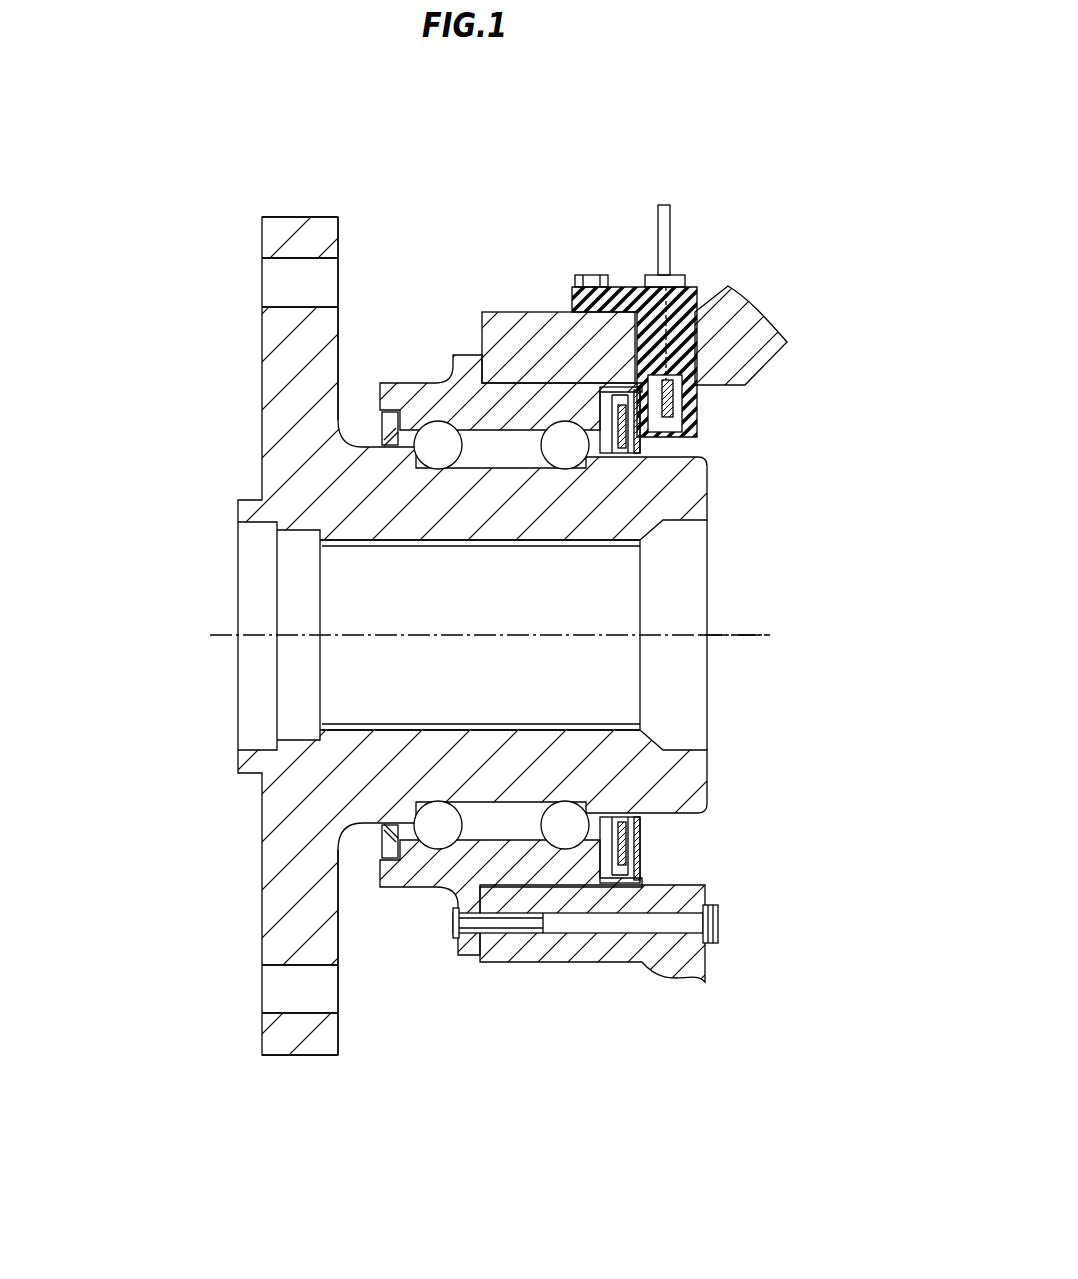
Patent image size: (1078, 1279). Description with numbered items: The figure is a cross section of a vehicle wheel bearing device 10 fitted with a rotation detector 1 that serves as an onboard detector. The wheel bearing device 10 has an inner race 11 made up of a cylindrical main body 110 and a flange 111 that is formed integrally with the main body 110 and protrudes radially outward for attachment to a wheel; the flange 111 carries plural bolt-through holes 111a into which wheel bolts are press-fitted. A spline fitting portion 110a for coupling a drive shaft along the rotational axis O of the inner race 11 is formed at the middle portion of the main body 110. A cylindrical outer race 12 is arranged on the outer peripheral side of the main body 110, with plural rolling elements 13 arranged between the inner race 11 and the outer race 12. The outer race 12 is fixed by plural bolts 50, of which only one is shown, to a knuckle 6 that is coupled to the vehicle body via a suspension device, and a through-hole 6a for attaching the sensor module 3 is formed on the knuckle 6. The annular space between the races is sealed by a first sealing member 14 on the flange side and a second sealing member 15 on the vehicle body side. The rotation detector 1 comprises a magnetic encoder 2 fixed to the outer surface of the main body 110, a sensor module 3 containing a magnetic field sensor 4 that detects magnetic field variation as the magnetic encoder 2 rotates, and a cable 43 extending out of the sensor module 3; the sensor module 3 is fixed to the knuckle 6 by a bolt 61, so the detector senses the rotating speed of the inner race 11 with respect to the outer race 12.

The wheel bearing device 10 is at (272, 157).
The inner race 11 is at (473, 680).
The main body 110 is at (361, 576).
The spline fitting portion 110a is at (393, 728).
The flange 111 is at (189, 636).
The bolt-through hole 111a is at (237, 995).
The outer race 12 is at (467, 353).
The rolling element 13 is at (442, 457).
The first sealing member 14 is at (380, 420).
The second sealing member 15 is at (648, 438).
The rotation detector 1 is at (724, 510).
The magnetic encoder 2 is at (640, 448).
The sensor module 3 is at (739, 329).
The magnetic field sensor 4 is at (675, 417).
The cable 43 is at (660, 222).
The knuckle 6 is at (649, 617).
The through-hole 6a is at (690, 332).
The bolt 61 is at (590, 273).
The bolt 50 is at (560, 925).
The rotational axis O is at (752, 632).